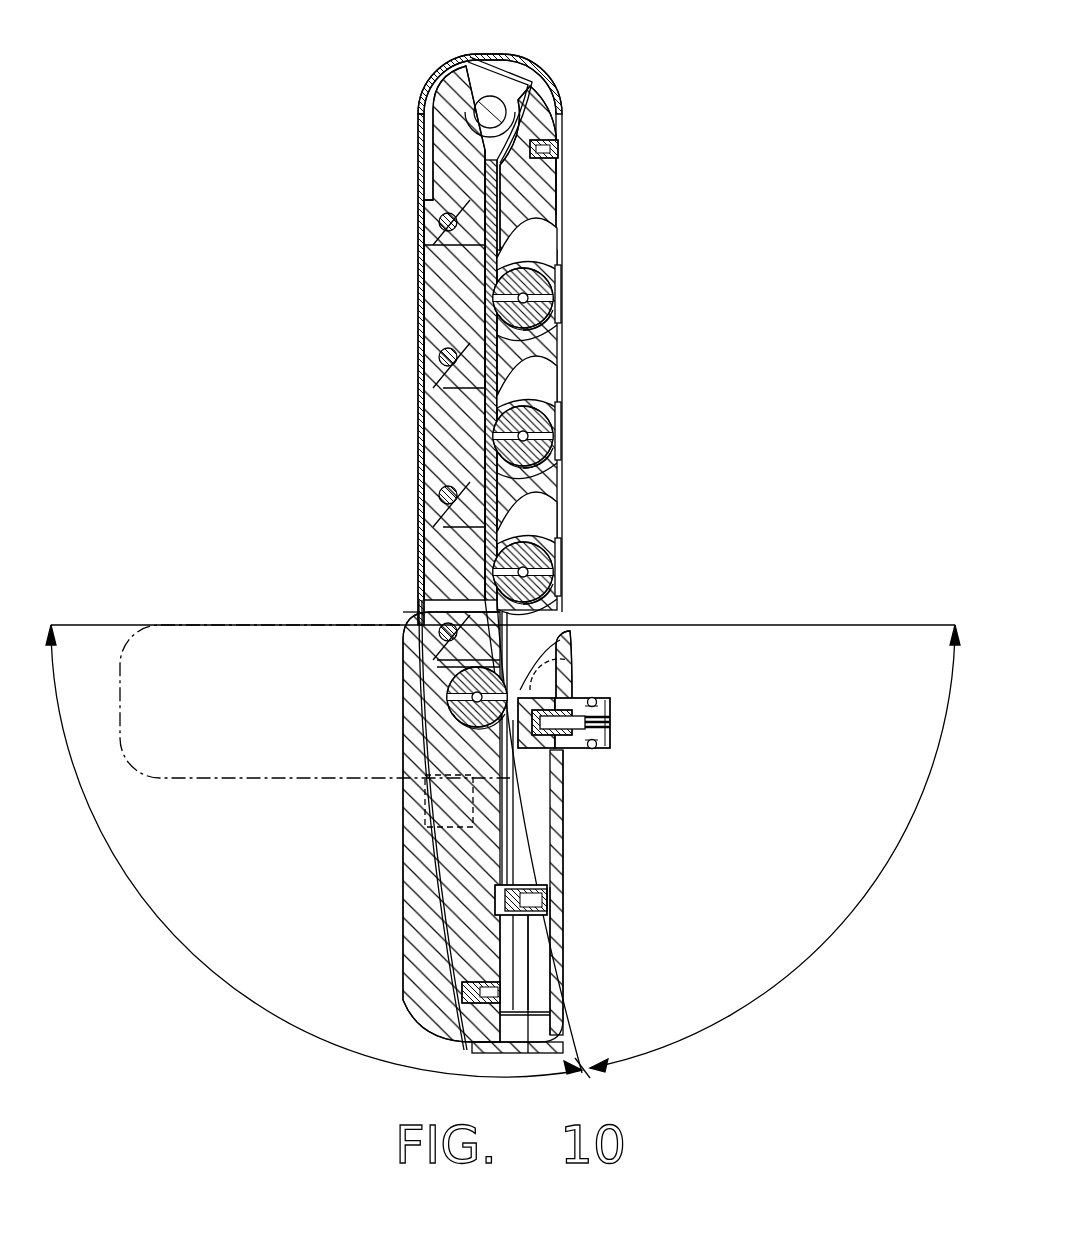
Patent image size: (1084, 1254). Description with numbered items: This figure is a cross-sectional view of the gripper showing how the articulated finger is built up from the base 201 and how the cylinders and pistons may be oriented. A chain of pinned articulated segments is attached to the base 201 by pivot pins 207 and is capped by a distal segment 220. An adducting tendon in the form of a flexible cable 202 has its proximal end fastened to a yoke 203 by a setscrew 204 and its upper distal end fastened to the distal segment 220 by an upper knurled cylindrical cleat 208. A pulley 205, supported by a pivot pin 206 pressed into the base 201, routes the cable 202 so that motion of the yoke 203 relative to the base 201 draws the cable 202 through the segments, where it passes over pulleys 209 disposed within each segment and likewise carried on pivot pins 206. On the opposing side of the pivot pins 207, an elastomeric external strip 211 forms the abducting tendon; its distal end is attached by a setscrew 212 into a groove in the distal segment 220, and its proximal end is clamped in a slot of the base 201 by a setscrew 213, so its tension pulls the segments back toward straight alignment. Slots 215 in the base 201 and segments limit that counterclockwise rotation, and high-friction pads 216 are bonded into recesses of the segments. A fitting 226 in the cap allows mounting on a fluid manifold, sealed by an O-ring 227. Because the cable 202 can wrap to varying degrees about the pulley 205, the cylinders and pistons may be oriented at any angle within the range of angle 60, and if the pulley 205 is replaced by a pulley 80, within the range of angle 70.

The angle 60 is at (314, 851).
The angle 70 is at (775, 848).
The pulley 80 is at (574, 675).
The base 201 is at (242, 778).
The cable 202 is at (518, 82).
The yoke 203 is at (515, 915).
The setscrew 204 is at (548, 896).
The pulley 205 is at (440, 690).
The pivot pin 206 is at (530, 300).
The pivot pins 207 is at (440, 220).
The upper knurled cylindrical cleat 208 is at (491, 97).
The pulleys 209 is at (542, 320).
The external strip 211 is at (416, 123).
The setscrew 212 is at (558, 147).
The setscrew 213 is at (462, 994).
The slots 215 is at (548, 242).
The pads 216 is at (562, 278).
The distal segment 220 is at (562, 192).
The fitting 226 is at (606, 702).
The O-ring 227 is at (598, 749).